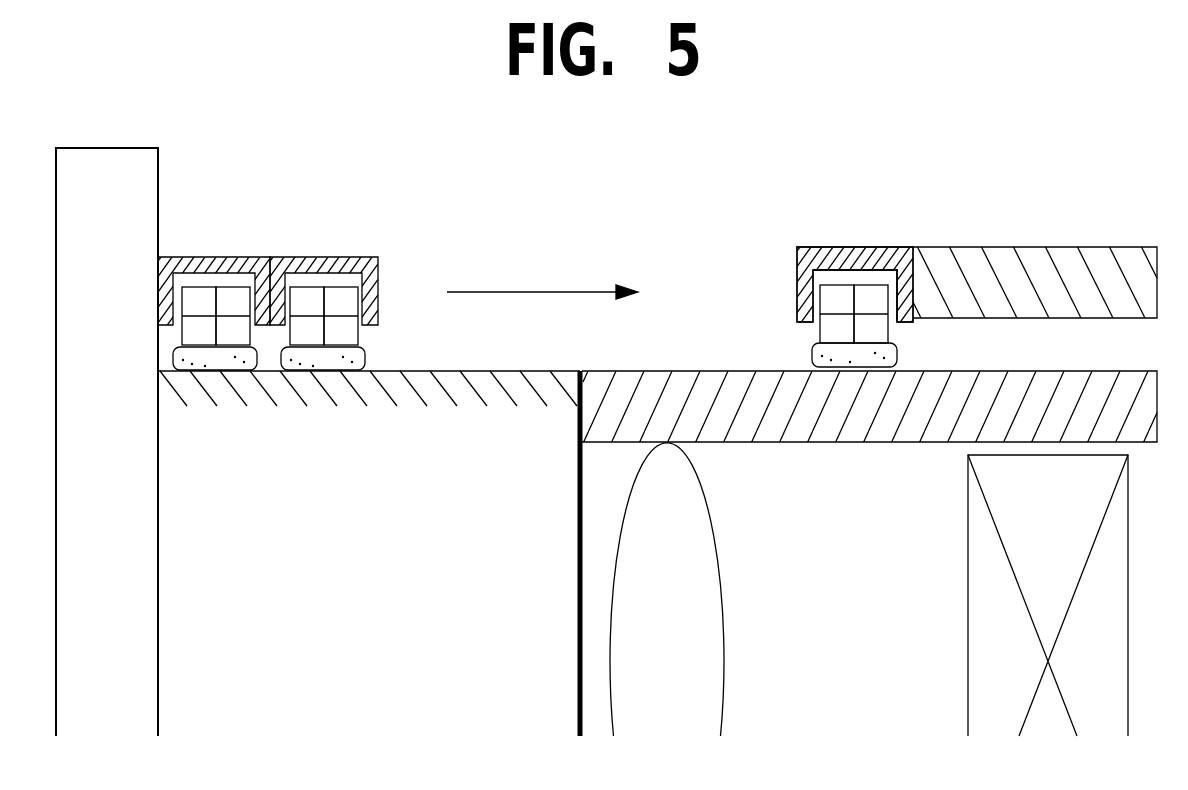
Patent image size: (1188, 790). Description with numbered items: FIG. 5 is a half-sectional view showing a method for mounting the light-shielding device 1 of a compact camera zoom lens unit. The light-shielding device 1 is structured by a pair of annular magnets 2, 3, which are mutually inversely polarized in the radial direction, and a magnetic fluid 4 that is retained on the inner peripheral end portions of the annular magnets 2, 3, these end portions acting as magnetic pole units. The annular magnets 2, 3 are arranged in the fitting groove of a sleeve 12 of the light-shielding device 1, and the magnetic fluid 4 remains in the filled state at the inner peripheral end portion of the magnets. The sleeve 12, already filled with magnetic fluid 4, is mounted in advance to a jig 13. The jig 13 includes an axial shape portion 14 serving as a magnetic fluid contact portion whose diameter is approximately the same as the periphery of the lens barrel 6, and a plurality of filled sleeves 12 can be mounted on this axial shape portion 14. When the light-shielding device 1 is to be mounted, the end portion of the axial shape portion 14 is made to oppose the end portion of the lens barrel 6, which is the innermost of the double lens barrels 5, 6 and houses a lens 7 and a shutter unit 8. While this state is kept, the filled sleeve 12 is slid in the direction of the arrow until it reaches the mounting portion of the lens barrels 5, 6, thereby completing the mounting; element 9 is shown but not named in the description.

The light-shielding device 1 is at (870, 240).
The annular magnet 2 is at (193, 287).
The annular magnet 3 is at (236, 287).
The magnetic fluid 4 is at (210, 357).
The lens barrel 5 is at (1037, 255).
The lens barrel 6 is at (667, 388).
The lens 7 is at (700, 566).
The shutter unit 8 is at (983, 633).
The gap 9 is at (852, 277).
The sleeve 12 is at (197, 260).
The jig 13 is at (97, 178).
The axial shape portion 14 is at (487, 369).